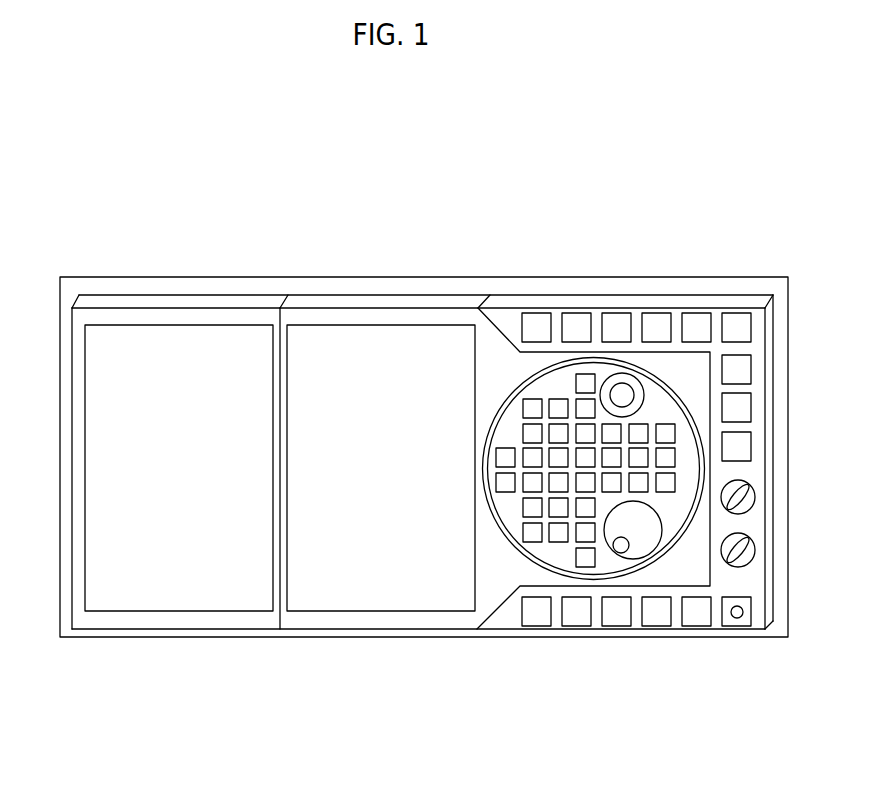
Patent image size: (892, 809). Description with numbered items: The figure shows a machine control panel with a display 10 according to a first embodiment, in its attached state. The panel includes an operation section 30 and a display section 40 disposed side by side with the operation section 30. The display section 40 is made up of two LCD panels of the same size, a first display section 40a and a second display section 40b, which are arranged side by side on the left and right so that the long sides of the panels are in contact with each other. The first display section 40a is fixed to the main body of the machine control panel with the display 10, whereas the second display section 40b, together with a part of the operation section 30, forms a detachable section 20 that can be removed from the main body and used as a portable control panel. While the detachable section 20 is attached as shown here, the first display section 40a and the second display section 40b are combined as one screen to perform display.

The machine control panel with a display 10 is at (659, 226).
The detachable section 20 is at (307, 273).
The operation section 30 is at (477, 658).
The display section 40 is at (281, 511).
The first display section 40a is at (179, 468).
The second display section 40b is at (381, 468).